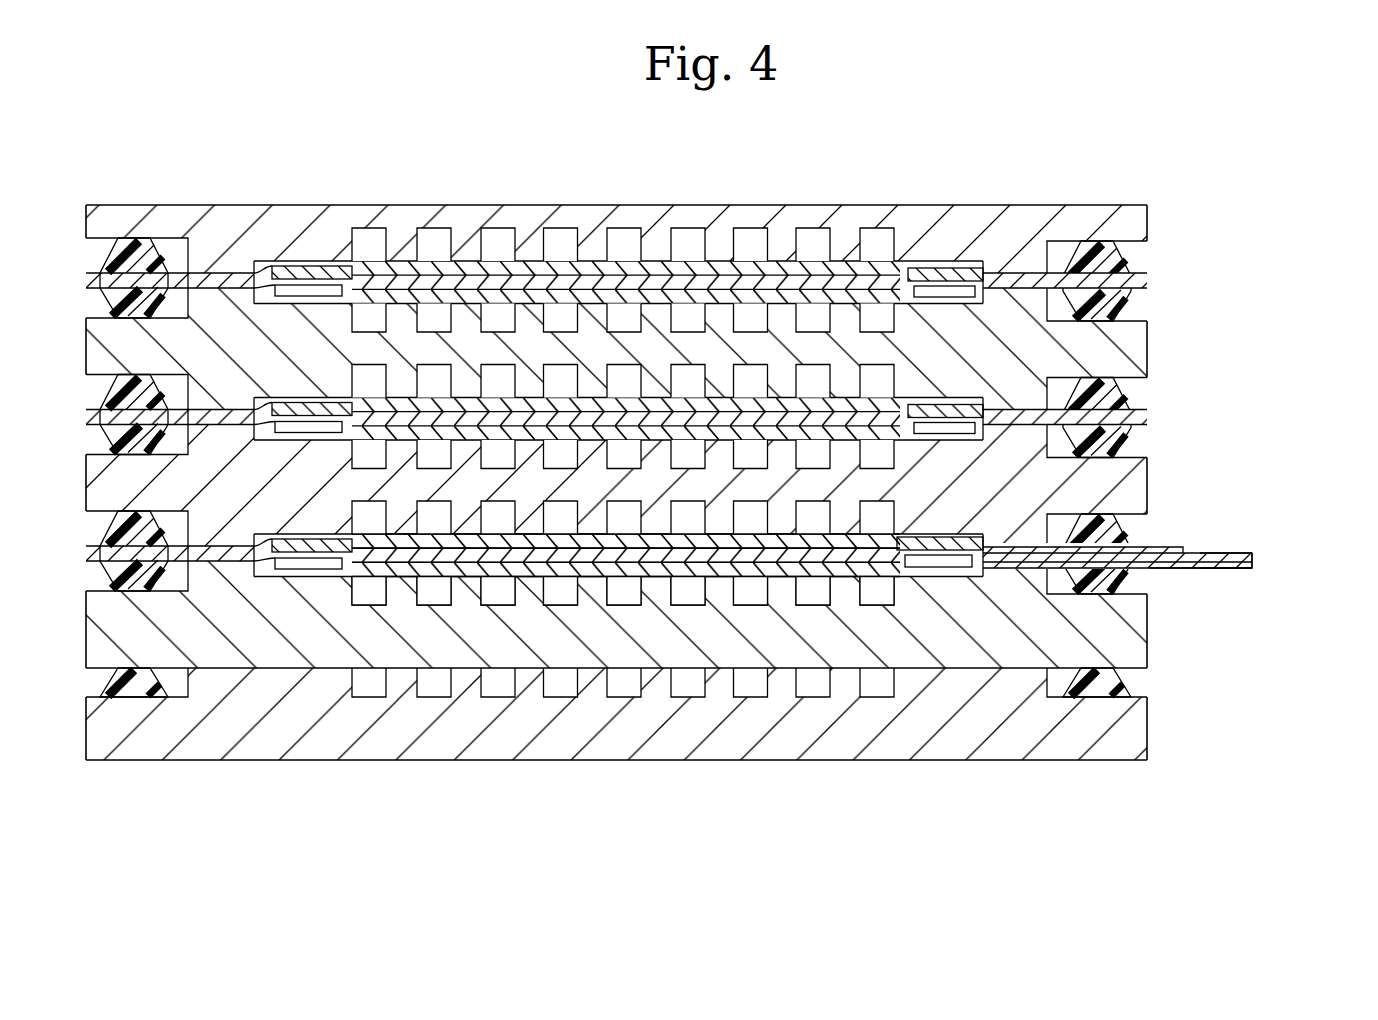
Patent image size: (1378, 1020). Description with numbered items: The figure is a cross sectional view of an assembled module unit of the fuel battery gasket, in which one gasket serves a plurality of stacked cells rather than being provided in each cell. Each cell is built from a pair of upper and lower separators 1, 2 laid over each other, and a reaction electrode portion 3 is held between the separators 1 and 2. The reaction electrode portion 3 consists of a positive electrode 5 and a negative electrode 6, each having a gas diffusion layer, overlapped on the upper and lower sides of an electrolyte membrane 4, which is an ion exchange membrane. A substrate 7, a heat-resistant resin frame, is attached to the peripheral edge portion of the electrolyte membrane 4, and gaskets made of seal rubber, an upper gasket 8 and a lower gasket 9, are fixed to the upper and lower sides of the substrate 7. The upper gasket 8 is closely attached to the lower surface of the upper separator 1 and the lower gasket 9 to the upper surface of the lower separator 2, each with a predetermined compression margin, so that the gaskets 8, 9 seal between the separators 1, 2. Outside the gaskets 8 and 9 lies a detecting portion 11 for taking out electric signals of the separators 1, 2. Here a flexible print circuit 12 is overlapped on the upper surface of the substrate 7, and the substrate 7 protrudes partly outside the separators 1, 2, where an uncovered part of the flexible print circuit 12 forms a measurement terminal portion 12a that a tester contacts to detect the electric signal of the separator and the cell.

The upper separator 1 is at (724, 486).
The lower separator 2 is at (528, 615).
The reaction electrode portion (MEA) 3 is at (620, 578).
The electrolyte membrane 4 is at (710, 558).
The positive electrode 5 is at (668, 552).
The negative electrode 6 is at (752, 570).
The substrate 7 is at (1203, 567).
The upper gasket 8 is at (1095, 538).
The lower gasket 9 is at (1122, 594).
The detecting portion 11 is at (1172, 531).
The flexible print circuit 12 is at (1158, 548).
The measurement terminal portion 12a is at (1238, 549).